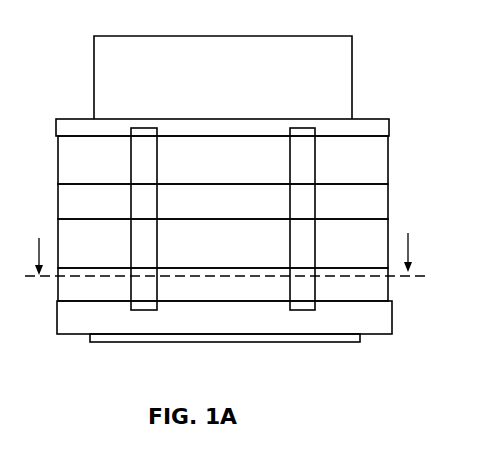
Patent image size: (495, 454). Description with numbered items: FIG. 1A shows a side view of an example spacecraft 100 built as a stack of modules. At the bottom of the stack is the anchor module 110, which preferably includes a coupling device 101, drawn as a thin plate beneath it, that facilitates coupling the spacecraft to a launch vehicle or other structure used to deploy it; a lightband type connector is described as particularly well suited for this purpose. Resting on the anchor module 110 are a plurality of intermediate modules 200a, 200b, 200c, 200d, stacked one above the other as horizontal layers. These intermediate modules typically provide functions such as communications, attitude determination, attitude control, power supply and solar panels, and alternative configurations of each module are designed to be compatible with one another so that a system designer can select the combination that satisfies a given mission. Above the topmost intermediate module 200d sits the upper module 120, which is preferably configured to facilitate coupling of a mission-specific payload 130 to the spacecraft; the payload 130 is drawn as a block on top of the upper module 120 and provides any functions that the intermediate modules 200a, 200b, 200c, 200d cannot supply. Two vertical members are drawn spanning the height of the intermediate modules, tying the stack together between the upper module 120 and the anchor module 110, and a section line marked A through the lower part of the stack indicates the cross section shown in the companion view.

The solar cell assembly 100 is at (260, 216).
The coupling device 101 is at (360, 337).
The anchor module 110 is at (392, 315).
The upper module 120 is at (390, 127).
The mission-specific payload 130 is at (353, 76).
The intermediate module 200a is at (390, 282).
The intermediate module 200b is at (390, 242).
The intermediate module 200c is at (390, 200).
The intermediate module 200d is at (390, 157).